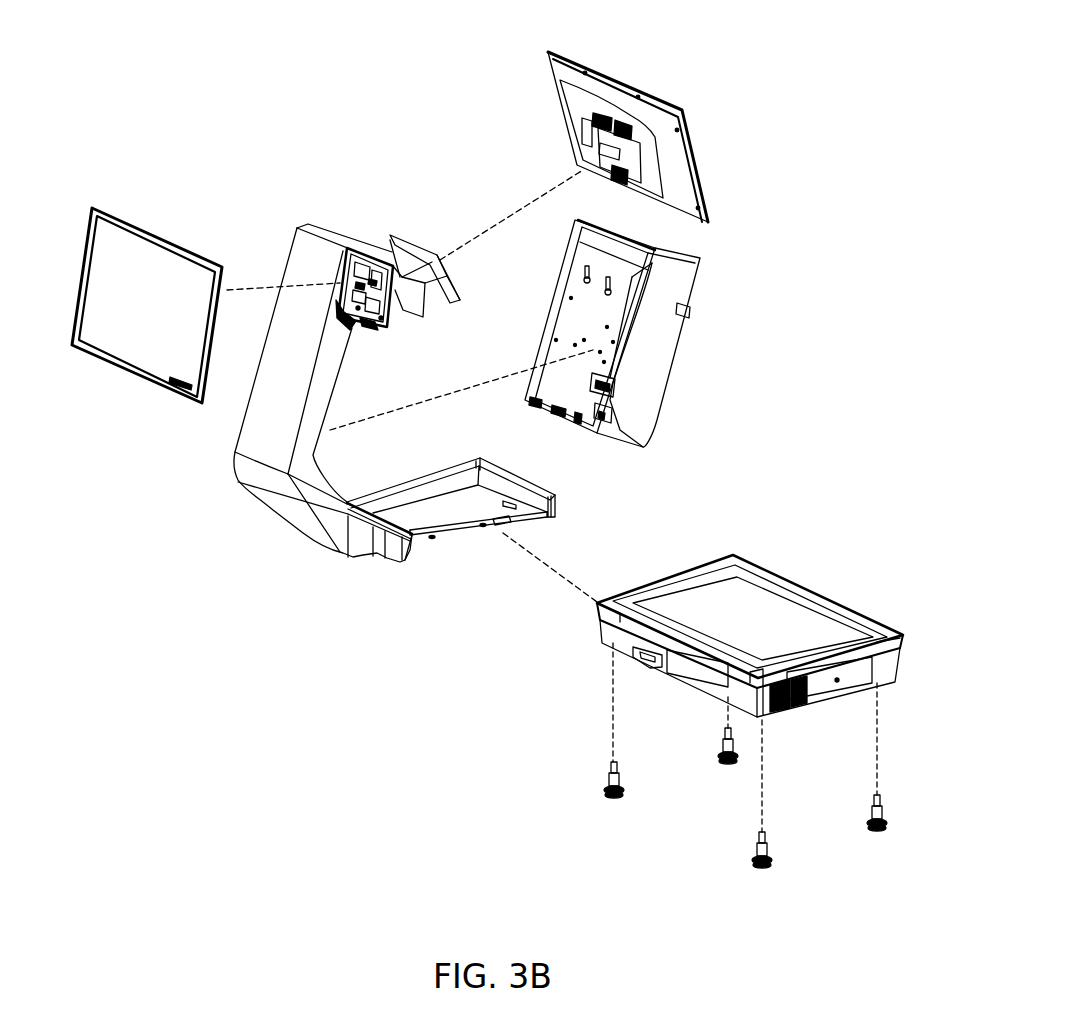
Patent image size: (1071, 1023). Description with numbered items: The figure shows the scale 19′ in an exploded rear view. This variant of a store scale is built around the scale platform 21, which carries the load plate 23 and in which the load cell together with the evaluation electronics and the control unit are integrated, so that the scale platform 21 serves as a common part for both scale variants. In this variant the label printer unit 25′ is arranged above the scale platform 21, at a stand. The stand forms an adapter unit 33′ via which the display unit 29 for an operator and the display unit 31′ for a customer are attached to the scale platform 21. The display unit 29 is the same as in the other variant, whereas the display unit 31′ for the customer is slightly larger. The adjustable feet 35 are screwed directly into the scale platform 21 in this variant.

The scale 19′ is at (335, 648).
The scale platform 21 is at (600, 633).
The load plate 23 is at (777, 573).
The label printer unit 25′ is at (665, 343).
The display unit for an operator 29 is at (628, 80).
The display unit for a customer 31′ is at (130, 370).
The adapter unit 33′ is at (326, 228).
The adjustable feet 35 is at (608, 787).